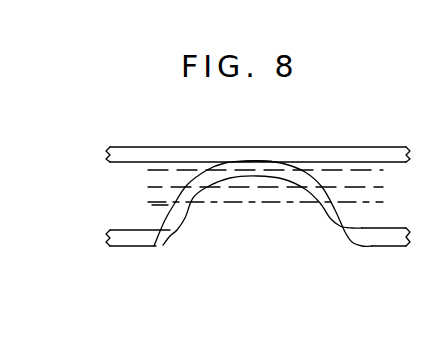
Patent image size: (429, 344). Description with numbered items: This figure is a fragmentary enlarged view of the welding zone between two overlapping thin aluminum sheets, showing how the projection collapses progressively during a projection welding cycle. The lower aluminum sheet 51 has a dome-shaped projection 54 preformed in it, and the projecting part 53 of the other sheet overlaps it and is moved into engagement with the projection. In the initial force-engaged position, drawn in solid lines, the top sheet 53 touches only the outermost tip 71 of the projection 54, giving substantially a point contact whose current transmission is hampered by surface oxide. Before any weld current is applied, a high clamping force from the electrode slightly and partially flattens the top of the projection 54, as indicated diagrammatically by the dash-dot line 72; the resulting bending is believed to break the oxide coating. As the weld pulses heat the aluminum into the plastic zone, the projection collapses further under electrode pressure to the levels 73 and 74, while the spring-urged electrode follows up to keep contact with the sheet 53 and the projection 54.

The aluminum sheet 51 is at (139, 246).
The projecting part 53 is at (127, 148).
The projection 54 is at (185, 212).
The tip 71 is at (258, 161).
The dash-dot line 72 is at (181, 170).
The level 73 is at (352, 187).
The level 74 is at (153, 205).